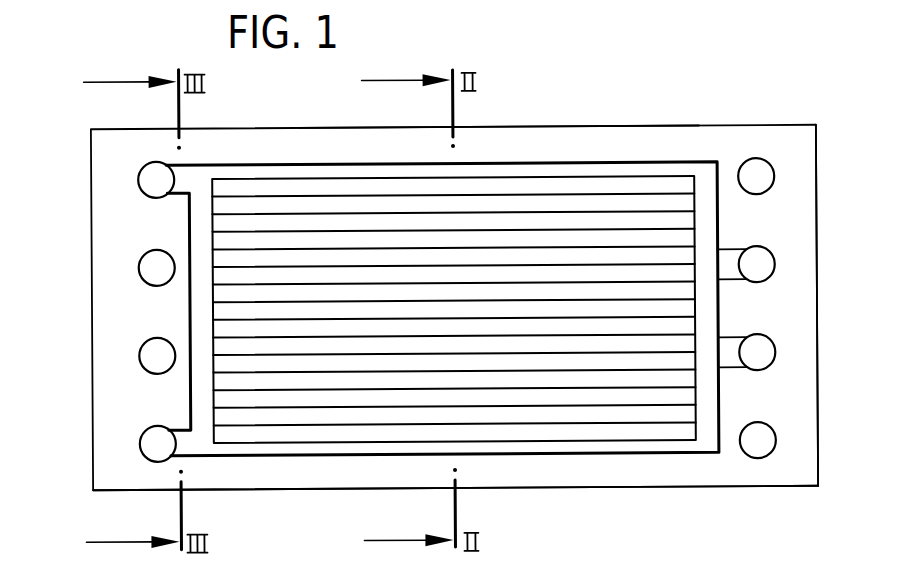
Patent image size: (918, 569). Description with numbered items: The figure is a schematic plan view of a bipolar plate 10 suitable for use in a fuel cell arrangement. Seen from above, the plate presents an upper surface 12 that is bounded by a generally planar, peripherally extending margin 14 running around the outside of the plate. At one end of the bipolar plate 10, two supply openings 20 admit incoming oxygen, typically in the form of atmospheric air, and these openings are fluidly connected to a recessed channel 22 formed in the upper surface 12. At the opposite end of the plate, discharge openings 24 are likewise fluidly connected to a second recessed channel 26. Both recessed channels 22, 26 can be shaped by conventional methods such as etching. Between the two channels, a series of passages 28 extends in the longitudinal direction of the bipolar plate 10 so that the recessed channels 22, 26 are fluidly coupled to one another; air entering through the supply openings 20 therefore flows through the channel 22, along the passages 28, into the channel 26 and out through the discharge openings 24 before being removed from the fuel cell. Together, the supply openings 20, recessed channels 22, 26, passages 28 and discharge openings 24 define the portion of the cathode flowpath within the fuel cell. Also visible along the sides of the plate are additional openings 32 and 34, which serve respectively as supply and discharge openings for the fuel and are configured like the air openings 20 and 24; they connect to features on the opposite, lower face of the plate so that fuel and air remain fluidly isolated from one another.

The bipolar plate 10 is at (739, 492).
The upper surface 12 is at (593, 139).
The peripherally extending margin 14 is at (795, 215).
The supply openings 20 is at (148, 180).
The recessed channel 22 is at (192, 222).
The discharge openings 24 is at (767, 263).
The recessed channel 26 is at (708, 402).
The passages 28 is at (660, 186).
The openings 32 is at (148, 267).
The openings 34 is at (765, 178).